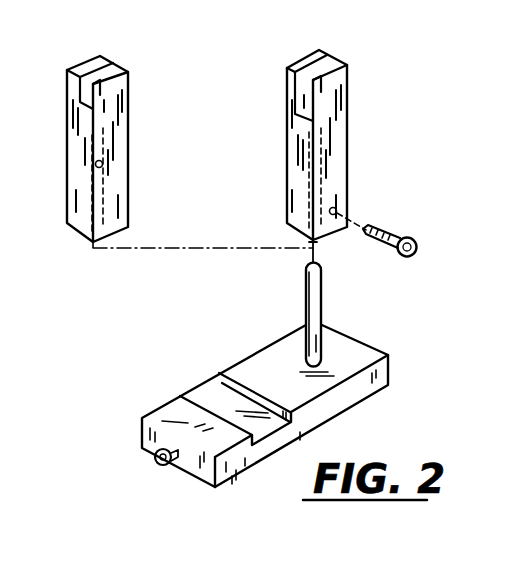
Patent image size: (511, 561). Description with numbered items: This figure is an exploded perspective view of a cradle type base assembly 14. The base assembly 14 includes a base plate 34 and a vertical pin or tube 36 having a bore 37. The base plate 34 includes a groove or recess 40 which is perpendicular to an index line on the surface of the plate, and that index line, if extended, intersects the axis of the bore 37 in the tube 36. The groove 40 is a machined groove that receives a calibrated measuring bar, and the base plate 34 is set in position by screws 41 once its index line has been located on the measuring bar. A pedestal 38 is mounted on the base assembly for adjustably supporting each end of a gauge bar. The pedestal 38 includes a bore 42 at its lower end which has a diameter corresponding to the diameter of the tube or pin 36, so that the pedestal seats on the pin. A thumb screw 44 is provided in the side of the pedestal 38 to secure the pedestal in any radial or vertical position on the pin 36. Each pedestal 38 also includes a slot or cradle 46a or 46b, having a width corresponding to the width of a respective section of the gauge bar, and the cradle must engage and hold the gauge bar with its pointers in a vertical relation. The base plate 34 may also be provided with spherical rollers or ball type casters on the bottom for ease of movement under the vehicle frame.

The base assembly 14 is at (380, 181).
The base plate 34 is at (386, 354).
The vertical pin or tube 36 is at (322, 306).
The bore 37 is at (322, 262).
The pedestal 38 is at (120, 115).
The groove or recess 40 is at (218, 375).
The screws 41 is at (155, 461).
The bore 42 is at (103, 165).
The thumb screw 44 is at (417, 240).
The slot or cradle 46a is at (104, 60).
The slot or cradle 46b is at (322, 59).